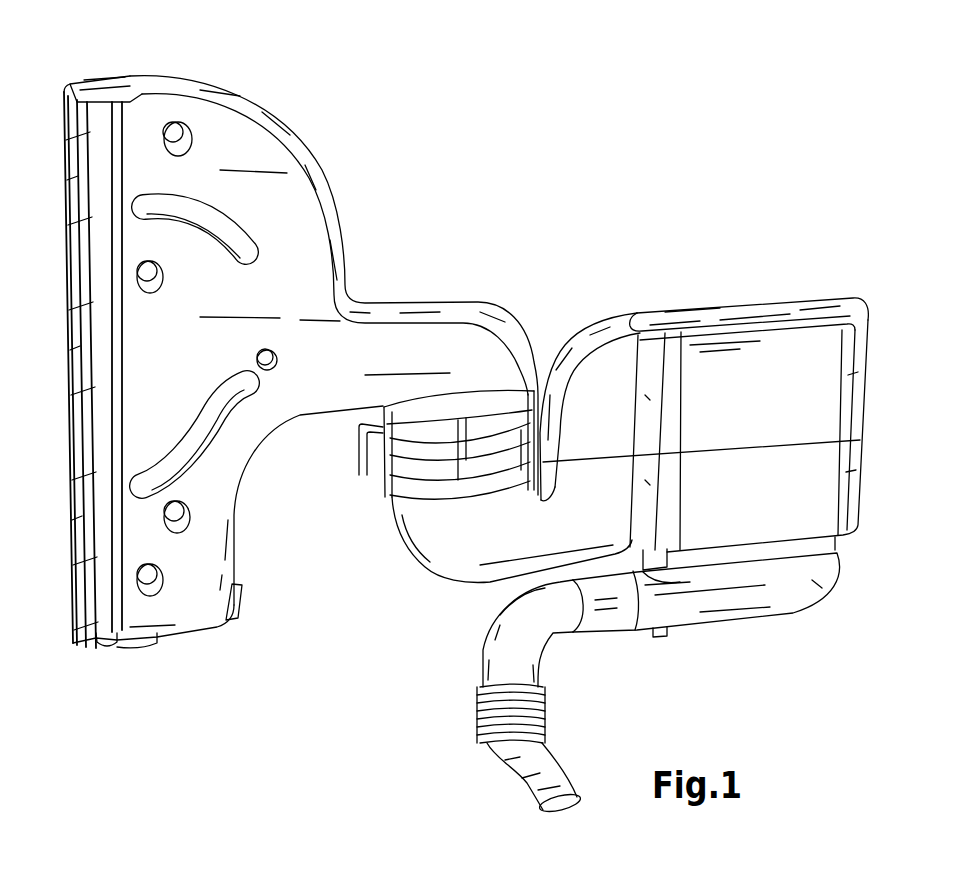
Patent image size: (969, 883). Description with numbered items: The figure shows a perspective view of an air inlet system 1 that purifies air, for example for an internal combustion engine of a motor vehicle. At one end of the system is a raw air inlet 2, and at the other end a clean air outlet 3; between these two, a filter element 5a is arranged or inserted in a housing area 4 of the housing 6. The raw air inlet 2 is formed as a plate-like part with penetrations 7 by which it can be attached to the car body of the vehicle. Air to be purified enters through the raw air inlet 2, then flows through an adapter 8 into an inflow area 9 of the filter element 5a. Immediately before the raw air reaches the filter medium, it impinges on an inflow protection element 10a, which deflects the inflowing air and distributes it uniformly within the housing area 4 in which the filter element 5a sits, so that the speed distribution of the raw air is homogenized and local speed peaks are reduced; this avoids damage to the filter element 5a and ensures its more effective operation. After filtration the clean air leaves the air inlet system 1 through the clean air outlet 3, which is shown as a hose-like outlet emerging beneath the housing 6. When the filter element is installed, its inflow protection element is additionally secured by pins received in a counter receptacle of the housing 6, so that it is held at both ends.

The air inlet system 1 is at (655, 228).
The raw air inlet 2 is at (100, 343).
The clean air outlet 3 is at (543, 817).
The housing area 4 is at (721, 292).
The filter element 5a is at (810, 355).
The housing 6 is at (784, 307).
The penetrations 7 is at (178, 128).
The adapter 8 is at (443, 560).
The inflow area 9 is at (611, 400).
The inflow protection element 10a is at (673, 370).